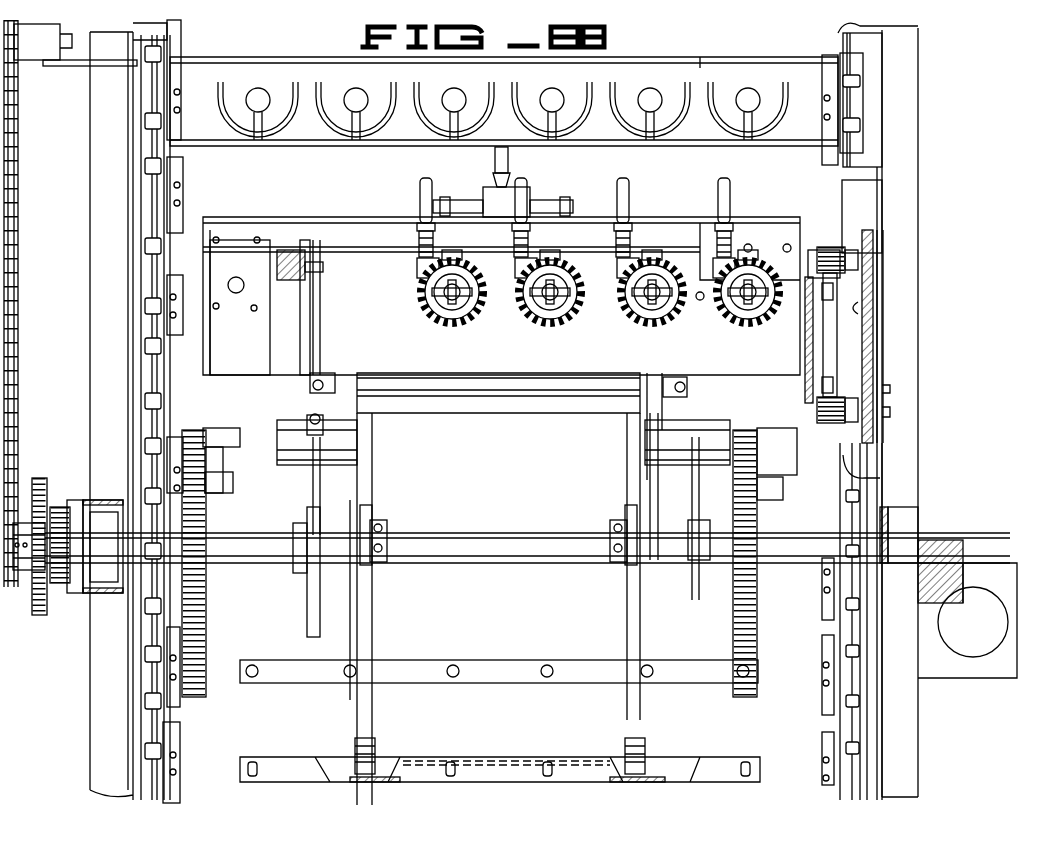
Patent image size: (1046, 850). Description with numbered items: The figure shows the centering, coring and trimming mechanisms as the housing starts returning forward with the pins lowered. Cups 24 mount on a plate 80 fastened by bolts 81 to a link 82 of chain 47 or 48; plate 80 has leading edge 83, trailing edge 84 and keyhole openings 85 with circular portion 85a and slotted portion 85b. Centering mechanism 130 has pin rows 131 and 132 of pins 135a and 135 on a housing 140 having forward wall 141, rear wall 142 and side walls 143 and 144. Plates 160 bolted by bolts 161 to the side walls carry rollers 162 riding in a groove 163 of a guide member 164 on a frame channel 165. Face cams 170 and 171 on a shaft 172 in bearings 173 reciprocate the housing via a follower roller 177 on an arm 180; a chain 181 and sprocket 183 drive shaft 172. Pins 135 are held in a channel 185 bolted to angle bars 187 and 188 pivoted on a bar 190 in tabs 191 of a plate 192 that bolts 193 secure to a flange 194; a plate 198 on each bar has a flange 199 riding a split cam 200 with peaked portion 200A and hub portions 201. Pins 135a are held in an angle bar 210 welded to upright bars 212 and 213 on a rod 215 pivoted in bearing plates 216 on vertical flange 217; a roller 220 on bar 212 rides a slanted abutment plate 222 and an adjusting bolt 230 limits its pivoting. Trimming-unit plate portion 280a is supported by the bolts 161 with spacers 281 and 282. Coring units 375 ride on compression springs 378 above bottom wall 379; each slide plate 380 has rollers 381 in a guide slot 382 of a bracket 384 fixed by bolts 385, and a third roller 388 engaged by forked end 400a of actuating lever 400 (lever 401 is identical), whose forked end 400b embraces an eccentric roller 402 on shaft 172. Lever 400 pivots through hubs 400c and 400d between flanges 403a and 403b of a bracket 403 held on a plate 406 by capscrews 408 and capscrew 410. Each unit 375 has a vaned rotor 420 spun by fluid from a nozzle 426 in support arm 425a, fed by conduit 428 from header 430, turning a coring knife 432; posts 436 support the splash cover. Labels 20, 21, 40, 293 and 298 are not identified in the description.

The machine 20 is at (952, 62).
The frame 21 is at (128, 761).
The ball 24 is at (322, 98).
The drive housing 40 is at (900, 508).
The base plate 47 is at (140, 783).
The side plate 48 is at (858, 756).
The guide plate 80 is at (207, 133).
The holes 81 is at (180, 110).
The bolts 82 is at (168, 92).
The plate 83 is at (706, 66).
The bracket 84 is at (218, 143).
The hook 85 is at (504, 86).
The hook arm 85a is at (444, 90).
The hook leg 85b is at (262, 140).
The carriage 130 is at (484, 652).
The bar 131 is at (784, 796).
The bar 132 is at (322, 690).
The holes 135 is at (343, 672).
The slots 135a is at (253, 776).
The valve assembly 140 is at (294, 215).
The bar 141 is at (507, 447).
The plate 142 is at (332, 202).
The bracket 143 is at (207, 340).
The bracket 144 is at (800, 358).
The shaft 160 is at (832, 335).
The sprocket 161 is at (845, 296).
The hub 162 is at (855, 263).
The bracket 163 is at (856, 310).
The plate 164 is at (865, 205).
The side plate 165 is at (97, 115).
The gear 170 is at (205, 585).
The bracket 171 is at (689, 645).
The shaft 172 is at (512, 545).
The bearing 173 is at (72, 500).
The bolt 177 is at (215, 479).
The bearing block 180 is at (218, 453).
The chain 181 is at (16, 325).
The hub 183 is at (17, 523).
The cross bar 185 is at (417, 682).
The spring 187 is at (352, 638).
The spring 188 is at (640, 637).
The bar 190 is at (532, 386).
The bracket 191 is at (375, 374).
The bar 192 is at (487, 395).
The bolt 193 is at (318, 376).
The plate 194 is at (258, 407).
The washer 198 is at (370, 615).
The nut 199 is at (373, 598).
The pin 200 is at (640, 493).
The pin 200A is at (627, 513).
The collar 201 is at (380, 562).
The tray 210 is at (570, 777).
The bolt 212 is at (378, 765).
The nut 213 is at (628, 755).
The rod 215 is at (463, 761).
The bolt 216 is at (355, 760).
The nut 217 is at (372, 735).
The washer 220 is at (370, 742).
The spring 222 is at (375, 752).
The bracket 230 is at (353, 747).
The bolt 280a is at (173, 297).
The plate 281 is at (180, 283).
The bracket 282 is at (212, 280).
The sprocket 293 is at (47, 613).
The chain 298 is at (24, 587).
The lever 375 is at (472, 343).
The hole 378 is at (236, 295).
The plate 379 is at (257, 366).
The bar 380 is at (334, 245).
The nut 381 is at (323, 300).
The block 382 is at (284, 283).
The hole 384 is at (216, 237).
The hole 385 is at (257, 237).
The bolt 388 is at (323, 286).
The arm 400 is at (323, 333).
The arm 400a is at (320, 278).
The arm 400b is at (312, 610).
The arm 400c is at (300, 520).
The arm 400d is at (363, 462).
The pin 401 is at (690, 355).
The gear 402 is at (300, 575).
The arm 403 is at (350, 484).
The arm 403a is at (300, 467).
The arm 403b is at (363, 444).
The bracket 406 is at (360, 424).
The link 408 is at (715, 440).
The pivot 410 is at (313, 412).
The valve 420 is at (430, 267).
The lever 425a is at (322, 316).
The fitting 426 is at (420, 244).
The pipe 428 is at (493, 163).
The manifold 430 is at (505, 195).
The cam 432 is at (598, 291).
The pin 436 is at (745, 325).